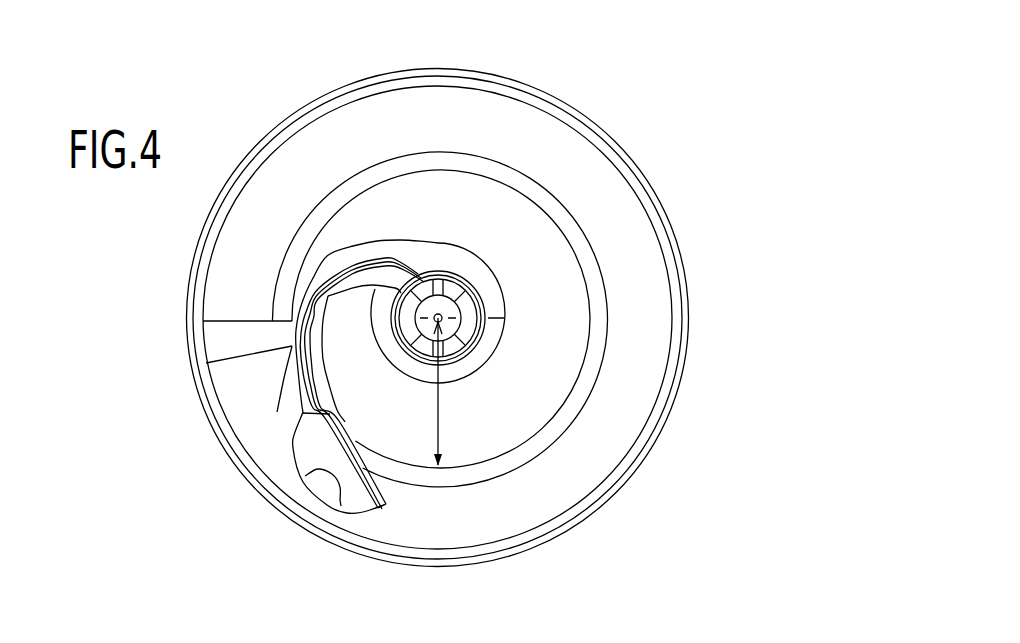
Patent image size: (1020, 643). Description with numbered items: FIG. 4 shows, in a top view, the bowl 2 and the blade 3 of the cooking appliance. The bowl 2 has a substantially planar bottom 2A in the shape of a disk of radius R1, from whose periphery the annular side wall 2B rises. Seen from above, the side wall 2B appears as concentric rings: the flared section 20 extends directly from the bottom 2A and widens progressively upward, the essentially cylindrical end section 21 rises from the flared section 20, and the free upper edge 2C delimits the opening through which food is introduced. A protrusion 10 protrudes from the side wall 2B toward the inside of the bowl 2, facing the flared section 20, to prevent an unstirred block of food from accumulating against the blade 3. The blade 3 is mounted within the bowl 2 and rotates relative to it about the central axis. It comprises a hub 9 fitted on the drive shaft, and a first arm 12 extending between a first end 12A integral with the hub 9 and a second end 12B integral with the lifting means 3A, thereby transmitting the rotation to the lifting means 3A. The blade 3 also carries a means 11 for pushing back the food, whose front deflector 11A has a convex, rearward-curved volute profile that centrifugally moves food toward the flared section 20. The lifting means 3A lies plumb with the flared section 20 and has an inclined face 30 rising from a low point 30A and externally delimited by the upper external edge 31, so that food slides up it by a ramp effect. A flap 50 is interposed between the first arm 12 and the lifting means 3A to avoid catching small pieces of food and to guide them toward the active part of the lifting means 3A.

The bowl 2 is at (648, 228).
The bottom 2A is at (550, 372).
The side wall 2B is at (537, 502).
The free upper edge 2C is at (572, 103).
The blade 3 is at (290, 452).
The lifting means 3A is at (313, 475).
The hub 9 is at (487, 293).
The protrusion 10 is at (238, 333).
The means for pushing back the food 11 is at (325, 257).
The front deflector 11A is at (352, 250).
The first arm 12 is at (382, 243).
The first end 12A is at (452, 247).
The second end 12B is at (302, 394).
The flared section 20 is at (647, 290).
The end section 21 is at (608, 486).
The inclined face 30 is at (338, 486).
The low point 30A is at (291, 410).
The upper external edge 31 is at (365, 515).
The flap 50 is at (313, 418).
The radius of the bottom R1 is at (454, 391).